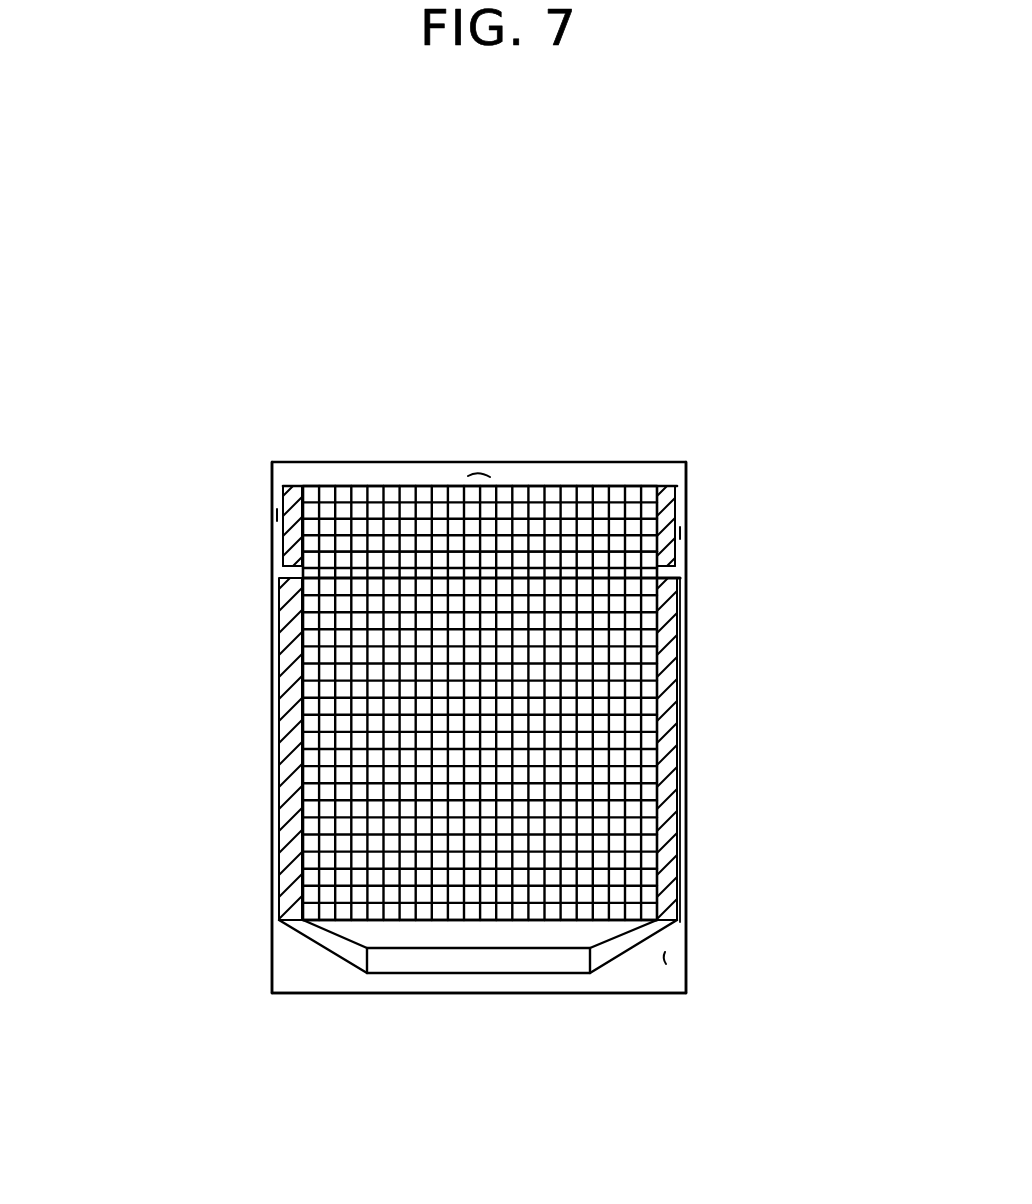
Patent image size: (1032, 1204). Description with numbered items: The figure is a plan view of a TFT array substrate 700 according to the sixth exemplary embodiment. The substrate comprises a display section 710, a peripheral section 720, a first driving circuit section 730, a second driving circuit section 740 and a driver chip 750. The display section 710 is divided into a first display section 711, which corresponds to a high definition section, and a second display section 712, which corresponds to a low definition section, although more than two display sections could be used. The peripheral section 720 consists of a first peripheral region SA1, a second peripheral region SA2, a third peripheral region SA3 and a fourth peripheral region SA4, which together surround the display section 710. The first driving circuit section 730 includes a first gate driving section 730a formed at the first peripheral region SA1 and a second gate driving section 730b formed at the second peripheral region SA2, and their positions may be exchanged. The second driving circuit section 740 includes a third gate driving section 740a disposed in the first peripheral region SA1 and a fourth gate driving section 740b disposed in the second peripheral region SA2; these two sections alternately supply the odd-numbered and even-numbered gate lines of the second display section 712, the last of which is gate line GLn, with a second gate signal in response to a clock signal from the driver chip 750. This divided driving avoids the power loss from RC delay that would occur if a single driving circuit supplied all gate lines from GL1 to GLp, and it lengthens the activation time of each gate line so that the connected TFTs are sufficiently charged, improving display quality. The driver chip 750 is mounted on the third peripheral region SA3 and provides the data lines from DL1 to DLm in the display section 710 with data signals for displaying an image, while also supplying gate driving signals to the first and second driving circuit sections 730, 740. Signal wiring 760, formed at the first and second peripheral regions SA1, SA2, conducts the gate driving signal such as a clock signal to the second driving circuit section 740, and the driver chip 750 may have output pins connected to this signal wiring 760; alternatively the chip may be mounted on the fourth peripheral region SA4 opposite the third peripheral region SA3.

The TFT array substrate 700 is at (581, 410).
The display section 710 is at (202, 533).
The first display section 711 is at (330, 650).
The second display section 712 is at (330, 556).
The peripheral section 720 is at (312, 956).
The first driving circuit section 730 is at (812, 665).
The first gate driving section 730a is at (670, 684).
The second gate driving section 730b is at (290, 730).
The second driving circuit section 740 is at (143, 508).
The third gate driving section 740a is at (668, 500).
The fourth gate driving section 740b is at (290, 496).
The driver chip 750 is at (482, 965).
The signal wiring 760 is at (275, 846).
The gate line GLn is at (660, 492).
The gate line GLp is at (685, 595).
The gate line GL1 is at (632, 908).
The data line DL1 is at (333, 923).
The data line DLm is at (618, 923).
The first peripheral region SA1 is at (682, 533).
The second peripheral region SA2 is at (286, 515).
The third peripheral region SA3 is at (667, 958).
The fourth peripheral region SA4 is at (480, 470).